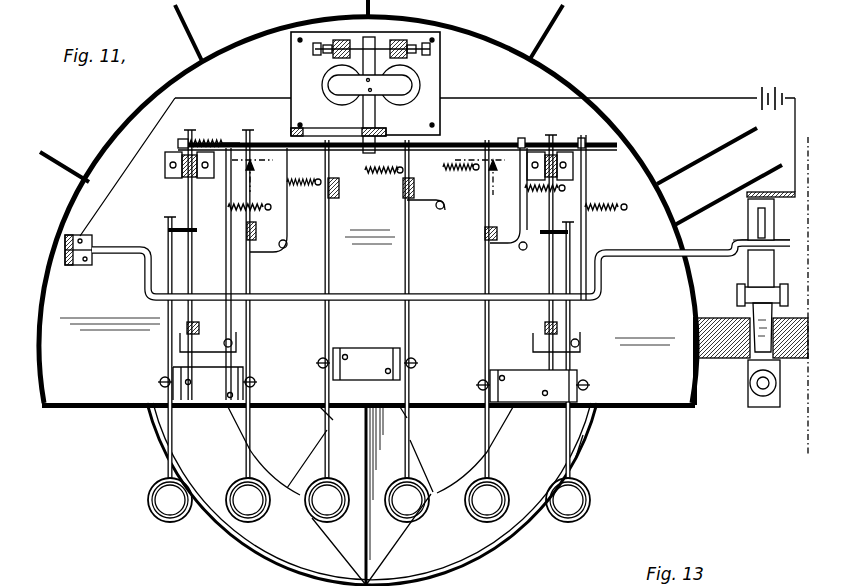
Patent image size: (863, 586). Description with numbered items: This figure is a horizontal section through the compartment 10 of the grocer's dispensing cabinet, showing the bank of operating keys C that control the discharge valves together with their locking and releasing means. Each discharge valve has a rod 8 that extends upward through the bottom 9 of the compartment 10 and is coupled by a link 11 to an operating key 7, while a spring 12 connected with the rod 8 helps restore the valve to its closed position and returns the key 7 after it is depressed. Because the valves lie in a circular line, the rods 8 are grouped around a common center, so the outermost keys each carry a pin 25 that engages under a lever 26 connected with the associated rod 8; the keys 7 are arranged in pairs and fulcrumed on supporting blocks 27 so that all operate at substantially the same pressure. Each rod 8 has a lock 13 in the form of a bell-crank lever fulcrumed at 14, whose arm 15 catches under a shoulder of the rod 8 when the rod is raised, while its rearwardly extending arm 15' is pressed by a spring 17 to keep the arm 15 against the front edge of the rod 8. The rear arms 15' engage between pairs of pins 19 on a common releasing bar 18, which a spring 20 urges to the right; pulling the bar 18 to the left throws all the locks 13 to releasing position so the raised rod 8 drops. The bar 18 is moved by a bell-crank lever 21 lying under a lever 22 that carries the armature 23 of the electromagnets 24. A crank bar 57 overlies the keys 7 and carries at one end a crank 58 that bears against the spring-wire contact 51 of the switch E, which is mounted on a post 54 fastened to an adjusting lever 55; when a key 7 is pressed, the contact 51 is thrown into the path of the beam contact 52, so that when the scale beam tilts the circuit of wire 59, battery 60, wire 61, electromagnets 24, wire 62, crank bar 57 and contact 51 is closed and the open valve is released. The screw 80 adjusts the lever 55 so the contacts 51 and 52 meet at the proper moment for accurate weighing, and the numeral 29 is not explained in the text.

The operating key 7 is at (580, 363).
The rod 8 is at (334, 176).
The bottom 9 is at (668, 393).
The compartment 10 is at (410, 292).
The link 11 is at (409, 178).
The spring 12 is at (368, 177).
The lock 13 is at (290, 212).
The fulcrum 14 is at (445, 209).
The arm 15 is at (338, 278).
The rearwardly extending arm 15' is at (437, 162).
The spring 17 is at (304, 179).
The releasing bar 18 is at (477, 142).
The pins 19 is at (519, 139).
The spring 20 is at (207, 135).
The bell-crank lever 21 is at (338, 128).
The lever 22 is at (375, 116).
The armature 23 is at (328, 84).
The electromagnets 24 is at (418, 84).
The pin 25 is at (197, 227).
The lever 26 is at (187, 197).
The supporting blocks 27 is at (370, 352).
The bracket 29 is at (522, 372).
The contact 51 is at (766, 227).
The contact 52 is at (771, 183).
The post 54 is at (748, 207).
The adjusting lever 55 is at (748, 280).
The crank bar 57 is at (447, 301).
The crank 58 is at (742, 240).
The wire 59 is at (795, 143).
The battery 60 is at (778, 86).
The wire 61 is at (690, 98).
The wire 62 is at (118, 181).
The screw 80 is at (765, 407).
The bank of operating keys C is at (583, 435).
The switch E is at (751, 307).